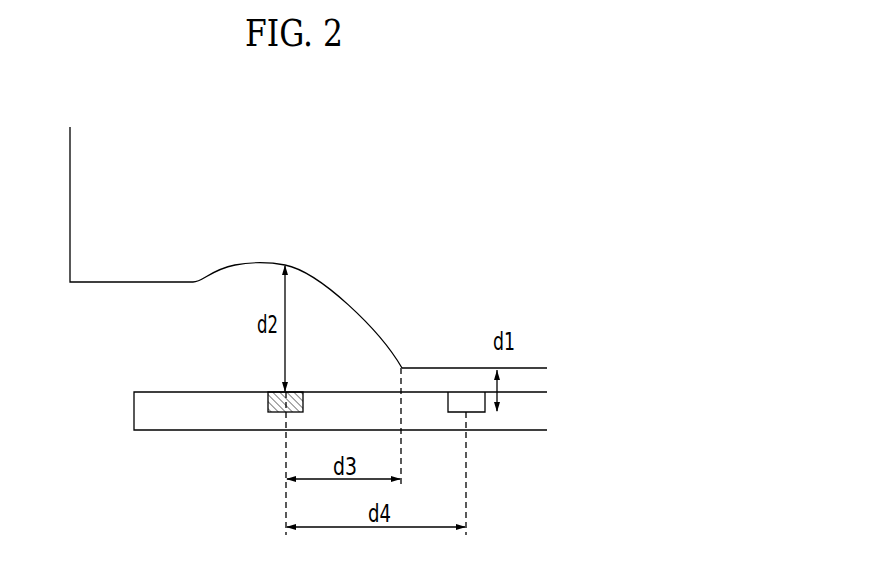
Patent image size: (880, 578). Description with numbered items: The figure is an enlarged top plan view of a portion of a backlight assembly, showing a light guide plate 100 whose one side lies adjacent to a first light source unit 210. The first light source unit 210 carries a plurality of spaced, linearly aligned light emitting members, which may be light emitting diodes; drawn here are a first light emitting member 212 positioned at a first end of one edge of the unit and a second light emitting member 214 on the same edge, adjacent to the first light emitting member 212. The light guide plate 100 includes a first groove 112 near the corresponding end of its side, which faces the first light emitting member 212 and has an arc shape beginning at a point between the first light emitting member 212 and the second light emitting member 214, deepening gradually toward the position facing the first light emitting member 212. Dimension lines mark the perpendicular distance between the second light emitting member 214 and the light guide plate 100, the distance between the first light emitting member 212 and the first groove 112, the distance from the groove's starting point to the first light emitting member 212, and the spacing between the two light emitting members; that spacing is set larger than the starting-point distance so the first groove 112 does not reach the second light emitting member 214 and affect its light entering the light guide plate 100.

The light guide plate 100 is at (97, 198).
The first groove 112 is at (217, 272).
The first light source unit 210 is at (145, 412).
The first light emitting member 212 is at (272, 411).
The second light emitting member 214 is at (458, 400).